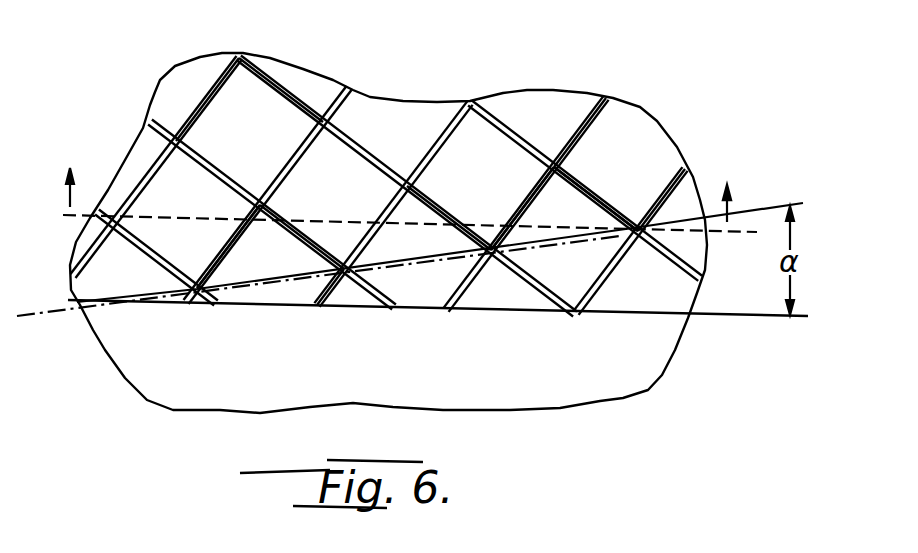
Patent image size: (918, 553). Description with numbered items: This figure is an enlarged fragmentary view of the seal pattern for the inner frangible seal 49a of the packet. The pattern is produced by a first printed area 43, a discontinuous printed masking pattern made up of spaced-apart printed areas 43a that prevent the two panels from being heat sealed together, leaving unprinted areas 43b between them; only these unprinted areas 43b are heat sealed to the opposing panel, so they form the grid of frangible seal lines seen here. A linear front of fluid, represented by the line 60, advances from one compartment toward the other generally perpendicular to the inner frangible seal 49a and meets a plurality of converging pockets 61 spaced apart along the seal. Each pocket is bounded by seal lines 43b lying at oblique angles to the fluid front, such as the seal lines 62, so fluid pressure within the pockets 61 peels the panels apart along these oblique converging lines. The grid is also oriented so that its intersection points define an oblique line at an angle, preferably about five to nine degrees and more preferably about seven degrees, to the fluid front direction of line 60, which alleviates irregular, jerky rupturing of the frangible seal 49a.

The first printed area 43 is at (533, 97).
The printed areas 43a is at (627, 130).
The unprinted areas 43b is at (335, 105).
The inner frangible seal 49a is at (737, 317).
The line representing the fluid front 60 is at (152, 206).
The converging pocket 61 is at (277, 247).
The seal lines 62 is at (517, 210).